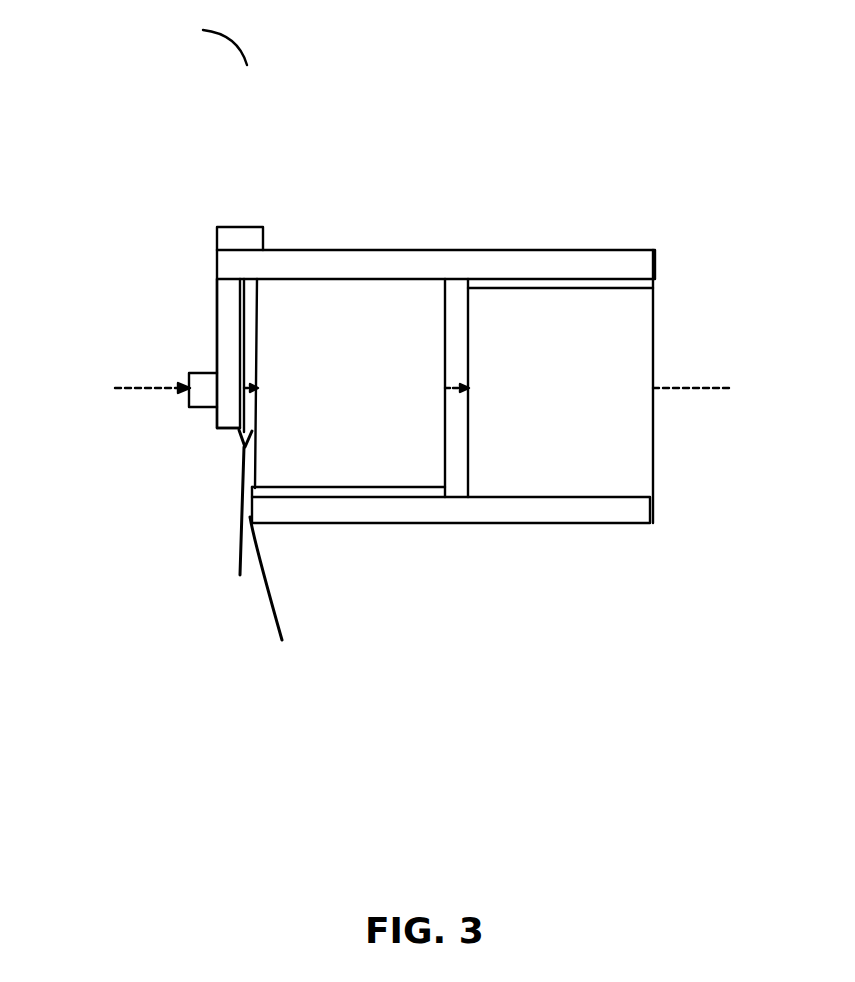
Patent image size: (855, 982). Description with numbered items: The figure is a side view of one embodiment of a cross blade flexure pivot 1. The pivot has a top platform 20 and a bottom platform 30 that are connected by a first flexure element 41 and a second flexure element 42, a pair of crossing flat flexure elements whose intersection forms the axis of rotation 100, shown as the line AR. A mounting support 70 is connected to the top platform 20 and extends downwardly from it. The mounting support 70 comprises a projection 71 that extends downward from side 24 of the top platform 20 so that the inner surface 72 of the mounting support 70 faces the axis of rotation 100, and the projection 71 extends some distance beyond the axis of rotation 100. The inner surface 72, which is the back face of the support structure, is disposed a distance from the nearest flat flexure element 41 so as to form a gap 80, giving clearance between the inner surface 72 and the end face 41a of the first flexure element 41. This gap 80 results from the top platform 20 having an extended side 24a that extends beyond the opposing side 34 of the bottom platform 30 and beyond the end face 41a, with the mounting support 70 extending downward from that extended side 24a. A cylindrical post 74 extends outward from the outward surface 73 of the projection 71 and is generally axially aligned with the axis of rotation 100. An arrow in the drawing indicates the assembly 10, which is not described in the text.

The cross blade flexure pivot 1 is at (185, 57).
The device body 10 is at (207, 538).
The top platform 20 is at (578, 250).
The side of top platform 24 is at (210, 273).
The extended side of top platform 24a is at (240, 223).
The bottom platform 30 is at (613, 523).
The opposing side of bottom platform 34 is at (279, 603).
The first flexure element 41 is at (373, 467).
The end face of first flexure element 41a is at (255, 447).
The second flexure element 42 is at (632, 353).
The mounting support 70 is at (185, 333).
The projection 71 is at (228, 407).
The inner surface 72 is at (247, 337).
The outward surface 73 is at (215, 312).
The cylindrical post 74 is at (192, 398).
The gap 80 is at (235, 531).
The axis of rotation 100 is at (742, 438).